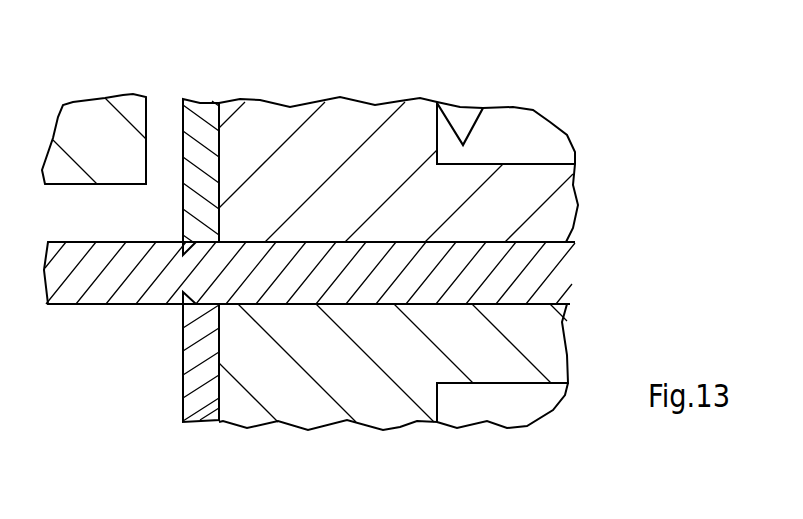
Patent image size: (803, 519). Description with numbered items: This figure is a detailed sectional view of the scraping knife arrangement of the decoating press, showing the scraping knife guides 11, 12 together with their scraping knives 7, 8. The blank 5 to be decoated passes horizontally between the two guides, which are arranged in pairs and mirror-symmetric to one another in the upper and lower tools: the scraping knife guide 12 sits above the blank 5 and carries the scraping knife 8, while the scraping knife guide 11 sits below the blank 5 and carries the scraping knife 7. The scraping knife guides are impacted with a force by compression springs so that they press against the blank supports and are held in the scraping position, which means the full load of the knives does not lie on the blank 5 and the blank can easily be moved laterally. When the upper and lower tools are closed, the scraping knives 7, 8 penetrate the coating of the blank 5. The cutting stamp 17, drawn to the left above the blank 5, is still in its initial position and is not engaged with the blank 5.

The blank 5 is at (112, 282).
The scraping knife 7 is at (202, 407).
The scraping knife 8 is at (202, 120).
The scraping knife guide 11 is at (387, 408).
The scraping knife guide 12 is at (345, 123).
The cutting stamp 17 is at (95, 123).